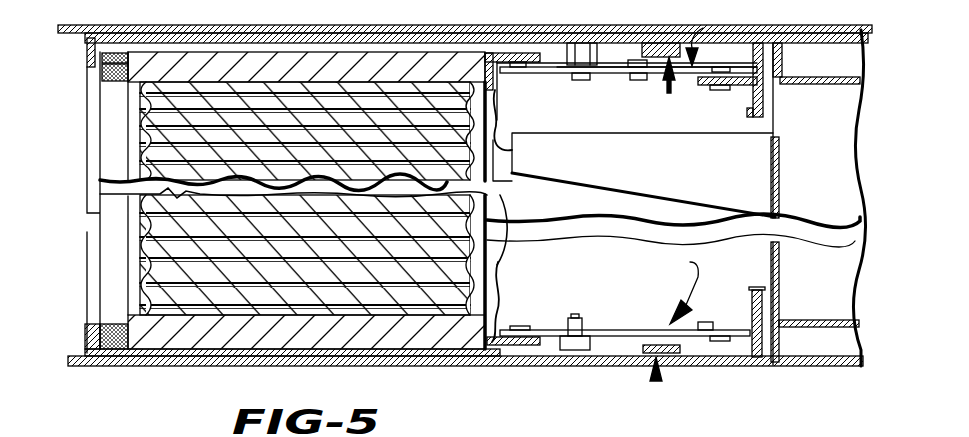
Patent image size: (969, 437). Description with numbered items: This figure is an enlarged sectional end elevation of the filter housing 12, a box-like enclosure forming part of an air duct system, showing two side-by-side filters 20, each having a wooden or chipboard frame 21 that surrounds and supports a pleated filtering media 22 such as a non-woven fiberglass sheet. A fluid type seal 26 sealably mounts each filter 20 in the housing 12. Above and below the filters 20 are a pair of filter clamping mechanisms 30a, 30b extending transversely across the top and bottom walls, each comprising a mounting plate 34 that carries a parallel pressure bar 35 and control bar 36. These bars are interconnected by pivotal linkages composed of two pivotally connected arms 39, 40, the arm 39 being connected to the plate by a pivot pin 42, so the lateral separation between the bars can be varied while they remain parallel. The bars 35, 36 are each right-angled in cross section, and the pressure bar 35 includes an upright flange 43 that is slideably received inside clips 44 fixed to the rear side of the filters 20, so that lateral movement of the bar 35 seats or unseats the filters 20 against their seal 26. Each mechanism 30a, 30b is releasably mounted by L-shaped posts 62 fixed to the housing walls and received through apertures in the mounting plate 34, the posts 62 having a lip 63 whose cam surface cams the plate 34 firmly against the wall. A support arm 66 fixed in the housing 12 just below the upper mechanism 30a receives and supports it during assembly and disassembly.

The housing 12 is at (103, 382).
The filter 20 is at (122, 145).
The frame 21 is at (283, 70).
The pleated filtering media 22 is at (150, 252).
The fluid type seal 26 is at (102, 68).
The filter clamping mechanism 30a is at (773, 182).
The filter clamping mechanism 30b is at (743, 302).
The mounting plate 34 is at (625, 14).
The pressure bar 35 is at (491, 82).
The control bar 36 is at (748, 97).
The arm 39 is at (624, 66).
The arm 40 is at (550, 67).
The pivot pin 42 is at (595, 48).
The upright flange 43 is at (483, 83).
The clip 44 is at (503, 140).
The post 62 is at (667, 93).
The lip 63 is at (493, 418).
The support arm 66 is at (732, 183).